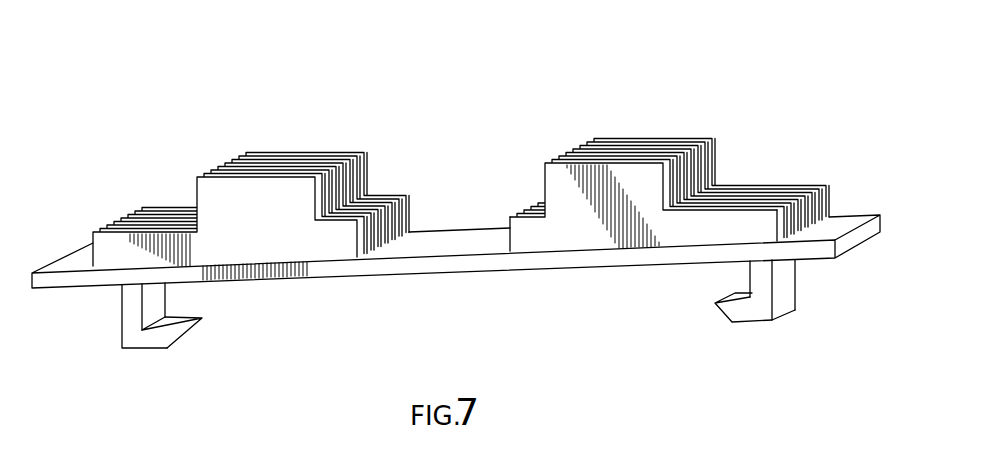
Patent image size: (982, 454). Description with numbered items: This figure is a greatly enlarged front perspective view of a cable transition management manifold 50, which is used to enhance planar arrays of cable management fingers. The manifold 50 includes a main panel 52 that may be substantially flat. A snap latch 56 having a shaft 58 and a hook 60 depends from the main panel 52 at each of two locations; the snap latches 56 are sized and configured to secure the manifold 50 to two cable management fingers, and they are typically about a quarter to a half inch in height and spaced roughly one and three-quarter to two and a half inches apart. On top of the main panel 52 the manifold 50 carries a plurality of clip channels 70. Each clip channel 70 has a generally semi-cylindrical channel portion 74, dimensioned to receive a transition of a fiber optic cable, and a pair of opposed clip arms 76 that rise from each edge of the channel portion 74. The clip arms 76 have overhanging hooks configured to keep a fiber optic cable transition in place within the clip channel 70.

The cable transition management manifold 50 is at (777, 104).
The main panel 52 is at (850, 222).
The snap latch 56 is at (466, 327).
The shaft 58 is at (130, 308).
The hook 60 is at (147, 345).
The clip channel 70 is at (172, 178).
The channel portion 74 is at (102, 253).
The clip arm 76 is at (233, 190).